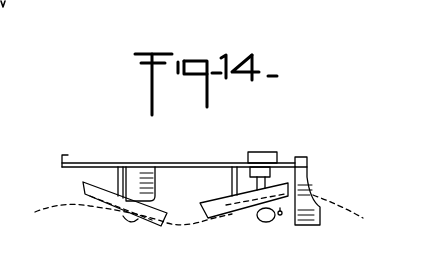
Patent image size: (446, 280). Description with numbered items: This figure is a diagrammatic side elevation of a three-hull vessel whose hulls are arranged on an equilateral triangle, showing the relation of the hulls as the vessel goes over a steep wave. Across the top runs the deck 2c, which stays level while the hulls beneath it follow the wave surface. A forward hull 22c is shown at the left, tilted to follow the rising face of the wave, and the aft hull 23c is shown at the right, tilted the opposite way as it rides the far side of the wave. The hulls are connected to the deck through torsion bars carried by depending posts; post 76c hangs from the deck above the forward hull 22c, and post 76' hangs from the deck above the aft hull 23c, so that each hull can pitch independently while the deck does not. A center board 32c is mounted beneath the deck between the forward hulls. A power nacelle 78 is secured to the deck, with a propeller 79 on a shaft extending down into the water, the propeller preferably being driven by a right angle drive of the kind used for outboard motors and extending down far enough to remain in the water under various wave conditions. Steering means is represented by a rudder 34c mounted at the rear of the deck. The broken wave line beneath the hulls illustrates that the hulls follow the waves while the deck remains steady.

The support bar 2c is at (180, 163).
The forward hull 22c is at (91, 182).
The post 76c is at (108, 177).
The center board 32c is at (143, 172).
The depending post 76' is at (239, 160).
The power nacelle 78 is at (272, 156).
The aft hull 23c is at (203, 204).
The rudder 34c is at (313, 192).
The propeller 79 is at (280, 217).